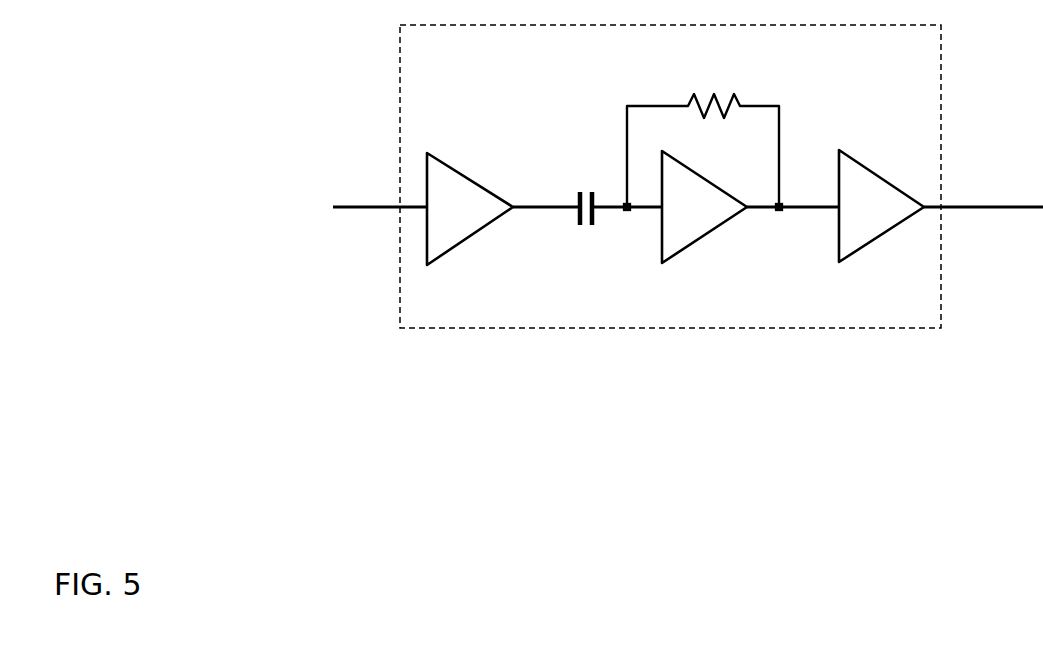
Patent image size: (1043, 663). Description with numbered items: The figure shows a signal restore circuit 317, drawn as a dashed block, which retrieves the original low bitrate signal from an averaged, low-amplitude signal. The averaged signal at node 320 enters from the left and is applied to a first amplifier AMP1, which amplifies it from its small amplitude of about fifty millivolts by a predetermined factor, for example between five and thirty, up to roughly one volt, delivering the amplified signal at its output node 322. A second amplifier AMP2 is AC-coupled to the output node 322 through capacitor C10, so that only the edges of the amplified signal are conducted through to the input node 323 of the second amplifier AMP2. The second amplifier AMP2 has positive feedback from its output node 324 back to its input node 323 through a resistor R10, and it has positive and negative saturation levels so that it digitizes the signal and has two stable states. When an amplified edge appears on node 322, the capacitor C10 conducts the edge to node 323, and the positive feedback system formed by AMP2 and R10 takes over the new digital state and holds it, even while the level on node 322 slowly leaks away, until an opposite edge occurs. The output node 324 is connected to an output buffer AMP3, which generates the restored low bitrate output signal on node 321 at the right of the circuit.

The signal restore circuit 317 is at (455, 330).
The node 320 is at (351, 206).
The node 321 is at (975, 205).
The output node 322 is at (541, 205).
The input node 323 is at (627, 211).
The output node 324 is at (795, 209).
The capacitor C10 is at (616, 194).
The resistor R10 is at (703, 138).
The first amplifier AMP1 is at (470, 209).
The second amplifier AMP2 is at (750, 207).
The output buffer AMP3 is at (881, 206).